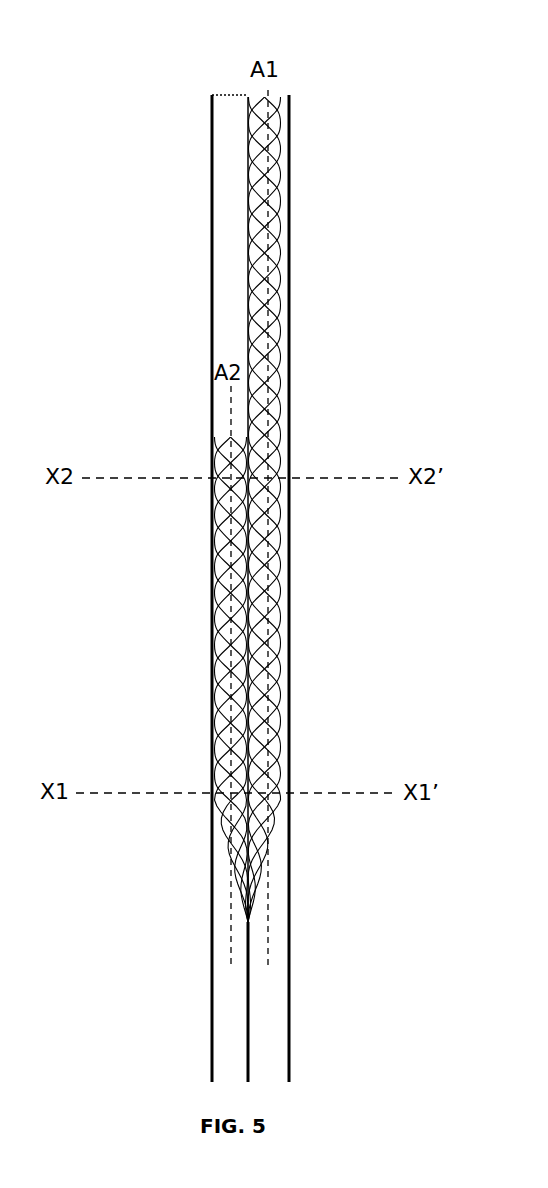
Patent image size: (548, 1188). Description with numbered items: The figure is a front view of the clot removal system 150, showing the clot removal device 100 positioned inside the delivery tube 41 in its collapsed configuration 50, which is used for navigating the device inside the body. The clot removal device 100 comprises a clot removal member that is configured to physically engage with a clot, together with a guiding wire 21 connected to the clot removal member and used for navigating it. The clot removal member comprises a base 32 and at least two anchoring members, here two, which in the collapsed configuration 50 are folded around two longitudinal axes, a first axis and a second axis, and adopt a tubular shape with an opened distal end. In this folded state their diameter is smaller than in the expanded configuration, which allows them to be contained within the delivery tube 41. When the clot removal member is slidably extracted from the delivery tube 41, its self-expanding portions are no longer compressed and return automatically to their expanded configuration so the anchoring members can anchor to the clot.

The clot removal system 150 is at (207, 60).
The delivery tube 41 is at (211, 187).
The collapsed configuration 50 is at (310, 327).
The guiding wire 21 is at (222, 993).
The clot removal device 100 is at (234, 888).
The base 32 is at (272, 800).